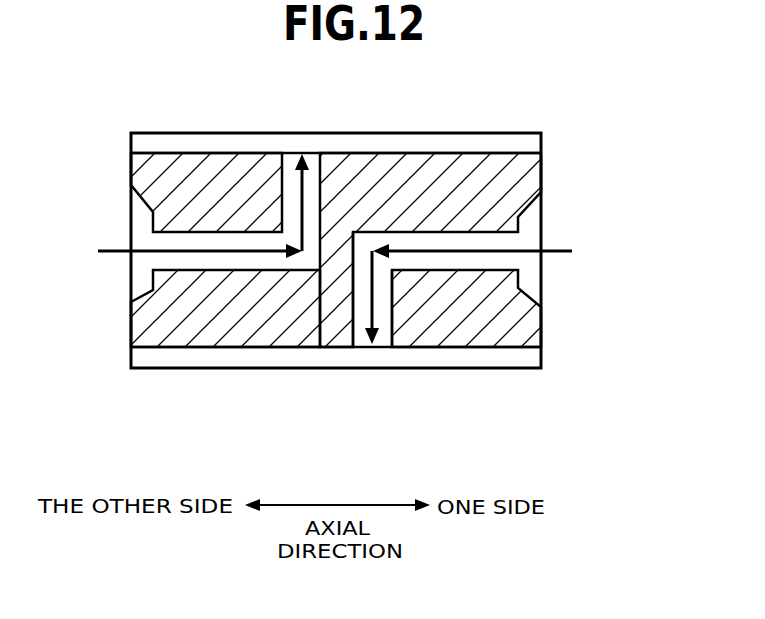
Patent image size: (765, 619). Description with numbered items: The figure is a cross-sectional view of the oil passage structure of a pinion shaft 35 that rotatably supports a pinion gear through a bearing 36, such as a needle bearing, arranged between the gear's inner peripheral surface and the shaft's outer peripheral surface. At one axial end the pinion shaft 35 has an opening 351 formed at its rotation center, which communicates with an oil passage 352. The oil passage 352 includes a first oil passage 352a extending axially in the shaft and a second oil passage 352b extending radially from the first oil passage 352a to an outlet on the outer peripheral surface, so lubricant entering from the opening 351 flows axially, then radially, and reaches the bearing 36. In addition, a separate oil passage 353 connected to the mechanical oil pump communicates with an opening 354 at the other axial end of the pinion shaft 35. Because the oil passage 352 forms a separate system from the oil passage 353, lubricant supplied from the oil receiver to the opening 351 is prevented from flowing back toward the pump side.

The pinion shaft 35 is at (556, 164).
The bearing 36 is at (428, 147).
The opening 351 is at (541, 222).
The oil passage 352 is at (447, 351).
The first oil passage 352a is at (452, 264).
The second oil passage 352b is at (387, 328).
The oil passage 353 is at (223, 233).
The opening 354 is at (131, 226).